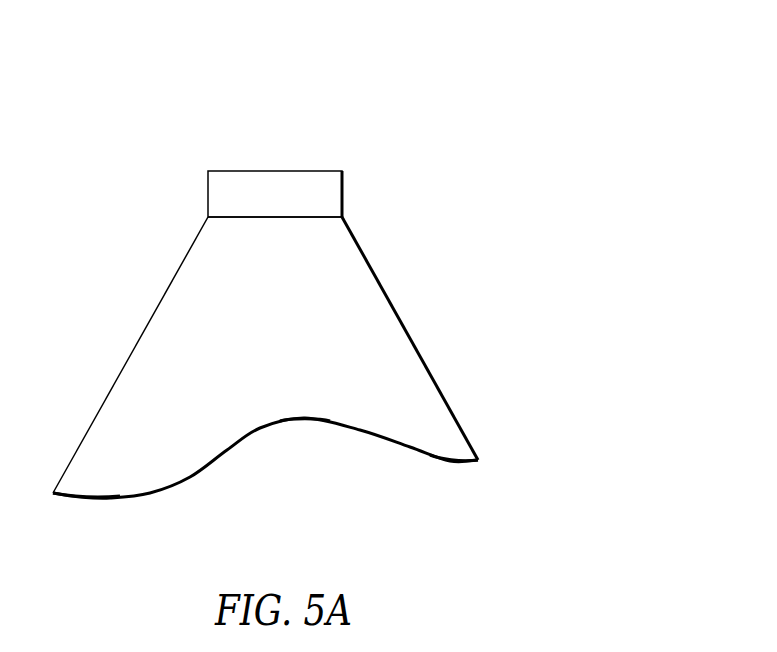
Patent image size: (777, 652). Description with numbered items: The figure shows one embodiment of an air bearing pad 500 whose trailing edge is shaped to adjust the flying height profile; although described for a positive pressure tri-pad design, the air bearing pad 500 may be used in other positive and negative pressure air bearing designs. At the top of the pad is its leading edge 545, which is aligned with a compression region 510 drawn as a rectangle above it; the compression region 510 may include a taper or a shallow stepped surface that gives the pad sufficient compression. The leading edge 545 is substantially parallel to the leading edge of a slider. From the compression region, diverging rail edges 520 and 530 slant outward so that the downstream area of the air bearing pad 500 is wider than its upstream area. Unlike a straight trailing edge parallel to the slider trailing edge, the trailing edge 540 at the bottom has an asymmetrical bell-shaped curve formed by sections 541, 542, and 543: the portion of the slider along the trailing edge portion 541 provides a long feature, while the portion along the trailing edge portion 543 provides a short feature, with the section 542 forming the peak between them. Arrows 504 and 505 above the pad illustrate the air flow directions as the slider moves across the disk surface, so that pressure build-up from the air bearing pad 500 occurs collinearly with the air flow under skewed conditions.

The air bearing pad 500 is at (528, 111).
The arrow 504 is at (347, 146).
The arrow 505 is at (196, 146).
The compression region 510 is at (343, 193).
The rail edge 520 is at (437, 382).
The rail edge 530 is at (115, 383).
The trailing edge 540 is at (292, 472).
The trailing edge portion 541 is at (128, 498).
The trailing edge section 542 is at (296, 416).
The trailing edge portion 543 is at (429, 460).
The leading edge 545 is at (275, 218).